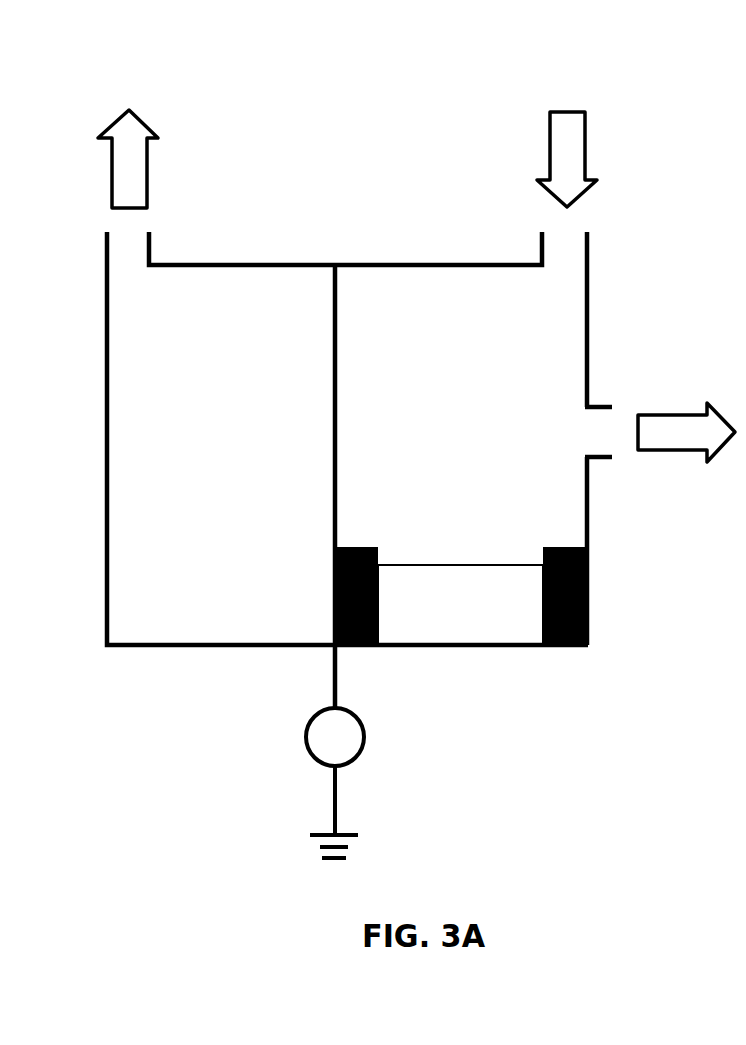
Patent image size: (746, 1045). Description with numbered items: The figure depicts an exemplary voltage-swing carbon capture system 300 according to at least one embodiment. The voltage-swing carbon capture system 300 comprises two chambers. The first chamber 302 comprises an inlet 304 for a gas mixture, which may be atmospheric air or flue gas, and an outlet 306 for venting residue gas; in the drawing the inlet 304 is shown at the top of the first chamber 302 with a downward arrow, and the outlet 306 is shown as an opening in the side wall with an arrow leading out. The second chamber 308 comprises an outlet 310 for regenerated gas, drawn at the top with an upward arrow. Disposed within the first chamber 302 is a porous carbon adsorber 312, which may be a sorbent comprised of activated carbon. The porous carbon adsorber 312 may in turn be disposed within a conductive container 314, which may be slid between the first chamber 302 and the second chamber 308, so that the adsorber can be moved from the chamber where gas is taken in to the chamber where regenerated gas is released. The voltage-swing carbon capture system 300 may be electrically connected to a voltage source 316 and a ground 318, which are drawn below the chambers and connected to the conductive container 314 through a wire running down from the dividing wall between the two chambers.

The voltage-swing carbon capture system 300 is at (183, 74).
The first chamber 302 is at (407, 486).
The inlet 304 is at (588, 245).
The outlet 306 is at (600, 404).
The second chamber 308 is at (347, 438).
The outlet 310 is at (152, 243).
The porous carbon adsorber 312 is at (460, 605).
The conductive container 314 is at (387, 646).
The voltage source 316 is at (305, 737).
The ground 318 is at (310, 835).